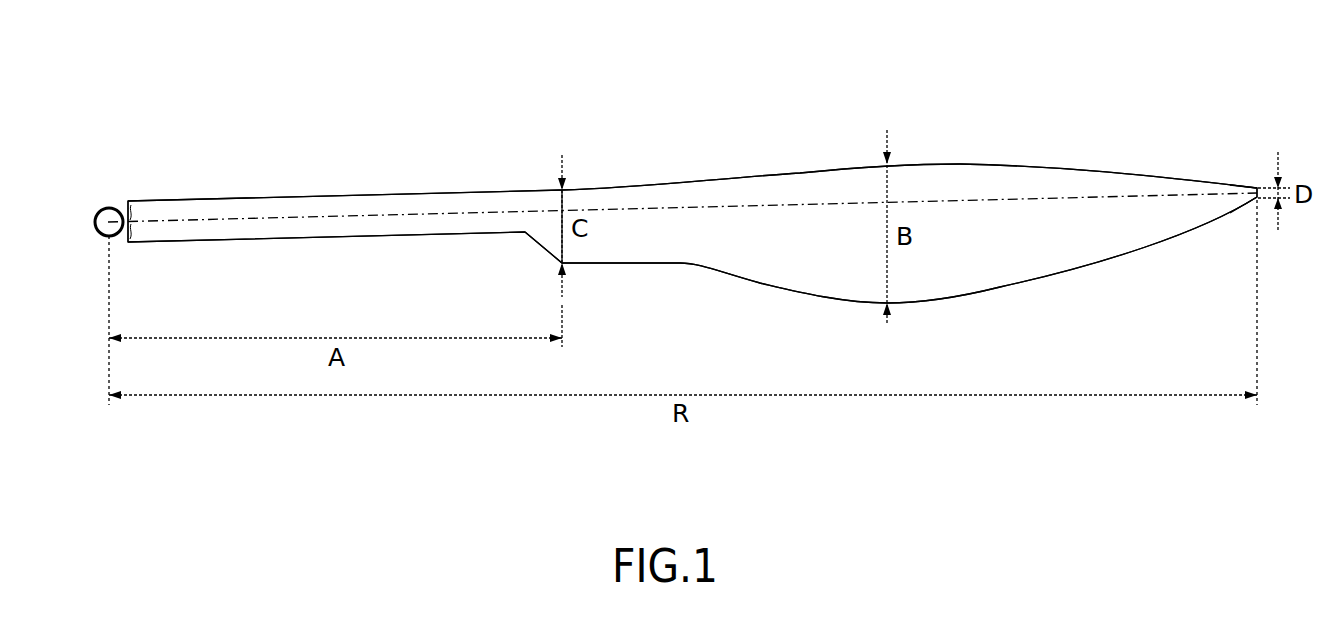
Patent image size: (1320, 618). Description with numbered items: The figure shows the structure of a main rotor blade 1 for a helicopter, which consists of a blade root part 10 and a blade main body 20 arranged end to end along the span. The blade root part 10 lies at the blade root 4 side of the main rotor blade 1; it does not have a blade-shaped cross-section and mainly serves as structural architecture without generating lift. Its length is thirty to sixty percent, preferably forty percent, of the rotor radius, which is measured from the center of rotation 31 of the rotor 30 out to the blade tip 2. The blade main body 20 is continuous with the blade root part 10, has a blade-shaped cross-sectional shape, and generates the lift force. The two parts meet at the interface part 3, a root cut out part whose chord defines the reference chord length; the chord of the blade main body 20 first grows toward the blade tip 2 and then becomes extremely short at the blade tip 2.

The main rotor blade 1 is at (640, 103).
The blade tip 2 is at (1258, 185).
The interface part 3 is at (558, 222).
The blade root 4 is at (128, 200).
The blade root part 10 is at (437, 200).
The blade main body 20 is at (810, 185).
The rotor 30 is at (106, 208).
The center of rotation 31 is at (109, 222).